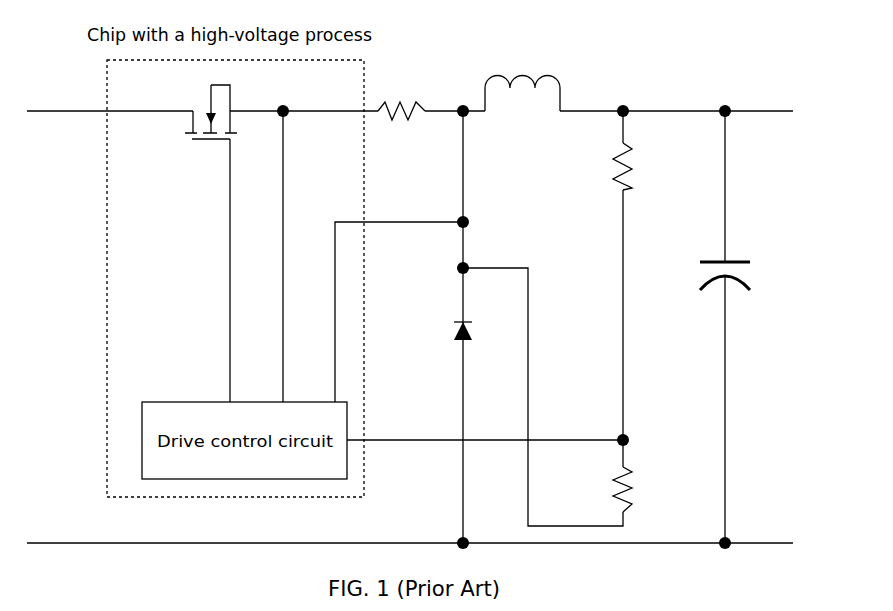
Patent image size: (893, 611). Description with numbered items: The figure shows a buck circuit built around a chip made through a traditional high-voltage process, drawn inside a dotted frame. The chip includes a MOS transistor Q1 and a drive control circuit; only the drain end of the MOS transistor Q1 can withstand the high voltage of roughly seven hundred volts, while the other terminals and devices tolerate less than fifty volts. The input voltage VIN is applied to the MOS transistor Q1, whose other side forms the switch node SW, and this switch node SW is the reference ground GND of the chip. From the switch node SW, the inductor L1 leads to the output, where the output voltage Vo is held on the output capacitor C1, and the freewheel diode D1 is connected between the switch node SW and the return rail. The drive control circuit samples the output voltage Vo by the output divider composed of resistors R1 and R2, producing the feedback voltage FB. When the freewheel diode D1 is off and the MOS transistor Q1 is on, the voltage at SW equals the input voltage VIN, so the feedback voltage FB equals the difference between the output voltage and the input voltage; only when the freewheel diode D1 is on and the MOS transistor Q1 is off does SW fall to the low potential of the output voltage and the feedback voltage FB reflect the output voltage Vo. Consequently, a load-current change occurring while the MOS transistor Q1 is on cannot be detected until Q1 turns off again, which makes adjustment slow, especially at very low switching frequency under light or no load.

The input voltage VIN is at (110, 94).
The MOS transistor Q1 is at (221, 243).
The resistor R1 is at (505, 146).
The switch node SW is at (448, 93).
The inductor L1 is at (522, 115).
The output voltage Vo is at (750, 97).
The output capacitor C1 is at (735, 327).
The reference ground GND is at (384, 301).
The freewheel diode D1 is at (538, 394).
The resistor R2 is at (638, 489).
The feedback voltage FB is at (488, 426).